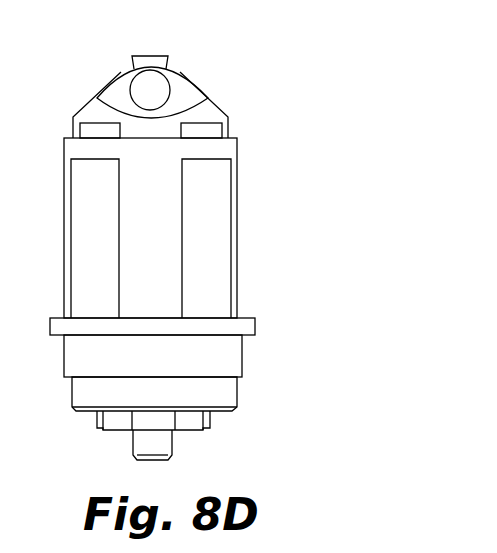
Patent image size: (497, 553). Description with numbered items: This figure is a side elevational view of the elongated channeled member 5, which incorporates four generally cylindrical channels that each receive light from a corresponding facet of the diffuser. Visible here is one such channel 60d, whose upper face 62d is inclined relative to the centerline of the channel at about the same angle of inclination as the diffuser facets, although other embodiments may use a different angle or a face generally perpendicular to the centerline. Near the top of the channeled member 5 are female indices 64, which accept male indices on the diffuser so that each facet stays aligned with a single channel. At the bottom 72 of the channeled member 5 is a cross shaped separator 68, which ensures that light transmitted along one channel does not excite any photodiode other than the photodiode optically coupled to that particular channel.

The channeled member 5 is at (238, 156).
The channel 60d is at (150, 98).
The upper face 62d is at (185, 95).
The female indices 64 is at (98, 128).
The cross shaped separator 68 is at (102, 432).
The bottom 72 is at (217, 415).